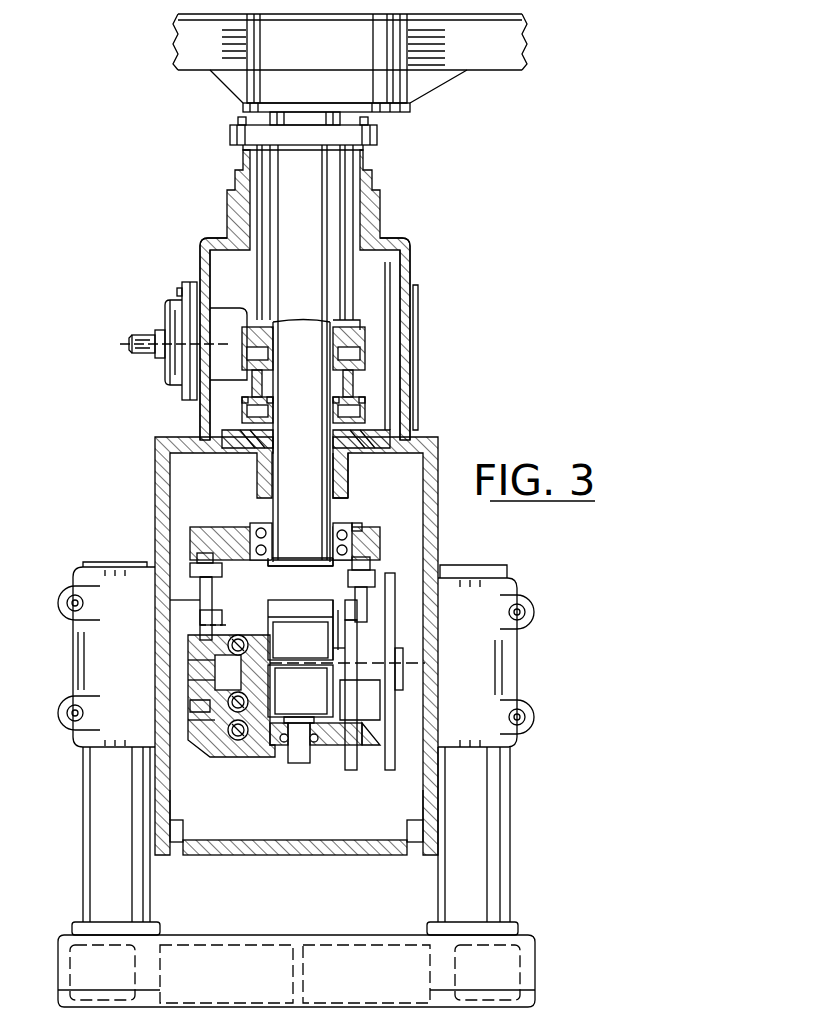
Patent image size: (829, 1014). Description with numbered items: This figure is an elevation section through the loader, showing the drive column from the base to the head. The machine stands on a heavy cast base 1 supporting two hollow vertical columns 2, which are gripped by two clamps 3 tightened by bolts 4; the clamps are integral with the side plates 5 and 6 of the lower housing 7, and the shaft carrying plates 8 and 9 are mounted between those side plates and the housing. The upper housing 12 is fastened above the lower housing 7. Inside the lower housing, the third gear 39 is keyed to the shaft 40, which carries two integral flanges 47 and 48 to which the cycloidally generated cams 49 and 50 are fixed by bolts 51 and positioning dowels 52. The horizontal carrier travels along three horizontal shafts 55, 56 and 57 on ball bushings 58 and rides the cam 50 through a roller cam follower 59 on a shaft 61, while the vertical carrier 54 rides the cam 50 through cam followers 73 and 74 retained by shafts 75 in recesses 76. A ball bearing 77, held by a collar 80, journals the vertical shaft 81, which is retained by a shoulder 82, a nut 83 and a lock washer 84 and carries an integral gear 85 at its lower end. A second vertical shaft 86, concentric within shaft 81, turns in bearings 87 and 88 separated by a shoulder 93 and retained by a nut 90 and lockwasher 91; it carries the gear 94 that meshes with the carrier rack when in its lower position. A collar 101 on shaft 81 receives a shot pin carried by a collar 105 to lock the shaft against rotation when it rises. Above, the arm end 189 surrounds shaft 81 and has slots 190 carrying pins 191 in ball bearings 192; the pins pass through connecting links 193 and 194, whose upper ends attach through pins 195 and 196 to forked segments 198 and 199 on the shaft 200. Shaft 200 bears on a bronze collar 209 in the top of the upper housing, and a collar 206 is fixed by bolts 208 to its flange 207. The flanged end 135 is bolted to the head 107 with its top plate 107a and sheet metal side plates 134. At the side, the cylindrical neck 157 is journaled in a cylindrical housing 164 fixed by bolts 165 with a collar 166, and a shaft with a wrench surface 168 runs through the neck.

The base 1 is at (246, 934).
The columns 2 is at (150, 878).
The clamps 3 is at (120, 671).
The bolts 4 is at (84, 604).
The side plate 5 is at (170, 805).
The side plate 6 is at (423, 803).
The lower housing 7 is at (232, 456).
The shaft carrying plate 8 is at (407, 830).
The shaft carrying plate 9 is at (183, 832).
The upper housing 12 is at (411, 262).
The third gear 39 is at (386, 772).
The shaft 40 is at (403, 652).
The flange 47 is at (352, 616).
The flange 48 is at (222, 618).
The cam 49 is at (395, 608).
The cam 50 is at (200, 604).
The bolts 51 is at (345, 649).
The positioning dowels 52 is at (338, 622).
The vertical carrier 54 is at (365, 540).
The horizontal shaft 55 is at (245, 630).
The horizontal shaft 56 is at (246, 695).
The horizontal shaft 57 is at (236, 742).
The ball bushings 58 is at (270, 628).
The roller cam follower 59 is at (190, 685).
The shaft 61 is at (190, 668).
The cam follower 73 is at (195, 720).
The cam follower 74 is at (200, 580).
The shafts 75 is at (222, 572).
The recesses 76 is at (205, 553).
The ball bearing 77 is at (255, 528).
The collar 80 is at (357, 523).
The vertical shaft 81 is at (308, 599).
The shoulder 82 is at (272, 567).
The nut 83 is at (260, 522).
The lock washer 84 is at (343, 523).
The gear 85 is at (300, 638).
The second vertical shaft 86 is at (300, 764).
The bearing 87 is at (330, 740).
The bearing 88 is at (278, 747).
The nut 90 is at (284, 745).
The lockwasher 91 is at (316, 746).
The shoulder 93 is at (340, 748).
The gear 94 is at (333, 684).
The collar 101 is at (347, 490).
The collar 105 is at (347, 456).
The head 107 is at (322, 94).
The top plate 107a is at (326, 20).
The side plates 134 is at (497, 51).
The flanged end 135 is at (400, 112).
The cylindrical neck 157 is at (158, 335).
The cylindrical housing 164 is at (190, 282).
The bolts 165 is at (180, 288).
The collar 166 is at (170, 300).
The wrench surface 168 is at (140, 353).
The arm end 189 is at (200, 398).
The slots 190 is at (250, 432).
The pins 191 is at (243, 412).
The ball bearings 192 is at (243, 403).
The connecting link 193 is at (353, 383).
The connecting link 194 is at (262, 383).
The pin 195 is at (365, 352).
The pin 196 is at (273, 352).
The forked segment 198 is at (357, 326).
The forked segment 199 is at (244, 332).
The shaft 200 is at (378, 240).
The collar 206 is at (377, 135).
The flange 207 is at (372, 148).
The bolts 208 is at (238, 122).
The bronze collar 209 is at (372, 180).